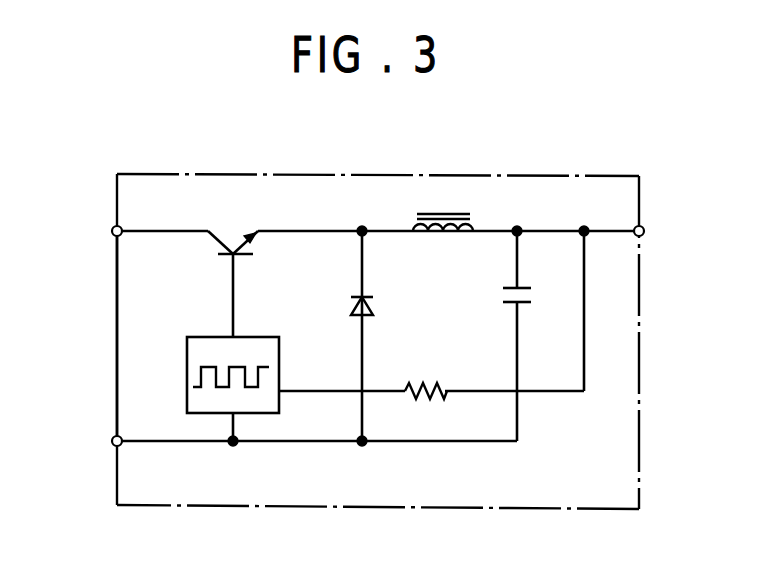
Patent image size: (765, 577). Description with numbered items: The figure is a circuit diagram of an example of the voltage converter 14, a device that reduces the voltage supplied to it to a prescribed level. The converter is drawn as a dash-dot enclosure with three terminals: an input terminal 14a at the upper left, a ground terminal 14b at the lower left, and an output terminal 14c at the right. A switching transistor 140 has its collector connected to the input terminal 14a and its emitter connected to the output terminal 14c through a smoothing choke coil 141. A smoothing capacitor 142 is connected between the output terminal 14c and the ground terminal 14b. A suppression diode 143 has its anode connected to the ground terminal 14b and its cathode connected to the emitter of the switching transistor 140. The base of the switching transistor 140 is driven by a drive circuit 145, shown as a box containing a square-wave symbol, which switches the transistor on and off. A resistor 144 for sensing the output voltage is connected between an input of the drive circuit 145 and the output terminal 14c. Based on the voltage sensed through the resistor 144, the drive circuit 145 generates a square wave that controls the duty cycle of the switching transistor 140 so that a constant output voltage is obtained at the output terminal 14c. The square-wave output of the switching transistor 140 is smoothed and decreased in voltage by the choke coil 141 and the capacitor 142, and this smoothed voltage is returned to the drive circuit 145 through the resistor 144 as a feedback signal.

The voltage converter 14 is at (386, 175).
The input terminal 14a is at (116, 226).
The ground terminal 14b is at (113, 446).
The output terminal 14c is at (644, 229).
The switching transistor 140 is at (240, 241).
The smoothing choke coil 141 is at (468, 213).
The smoothing capacitor 142 is at (529, 297).
The suppression diode 143 is at (373, 297).
The resistor 144 is at (430, 384).
The drive circuit 145 is at (263, 337).